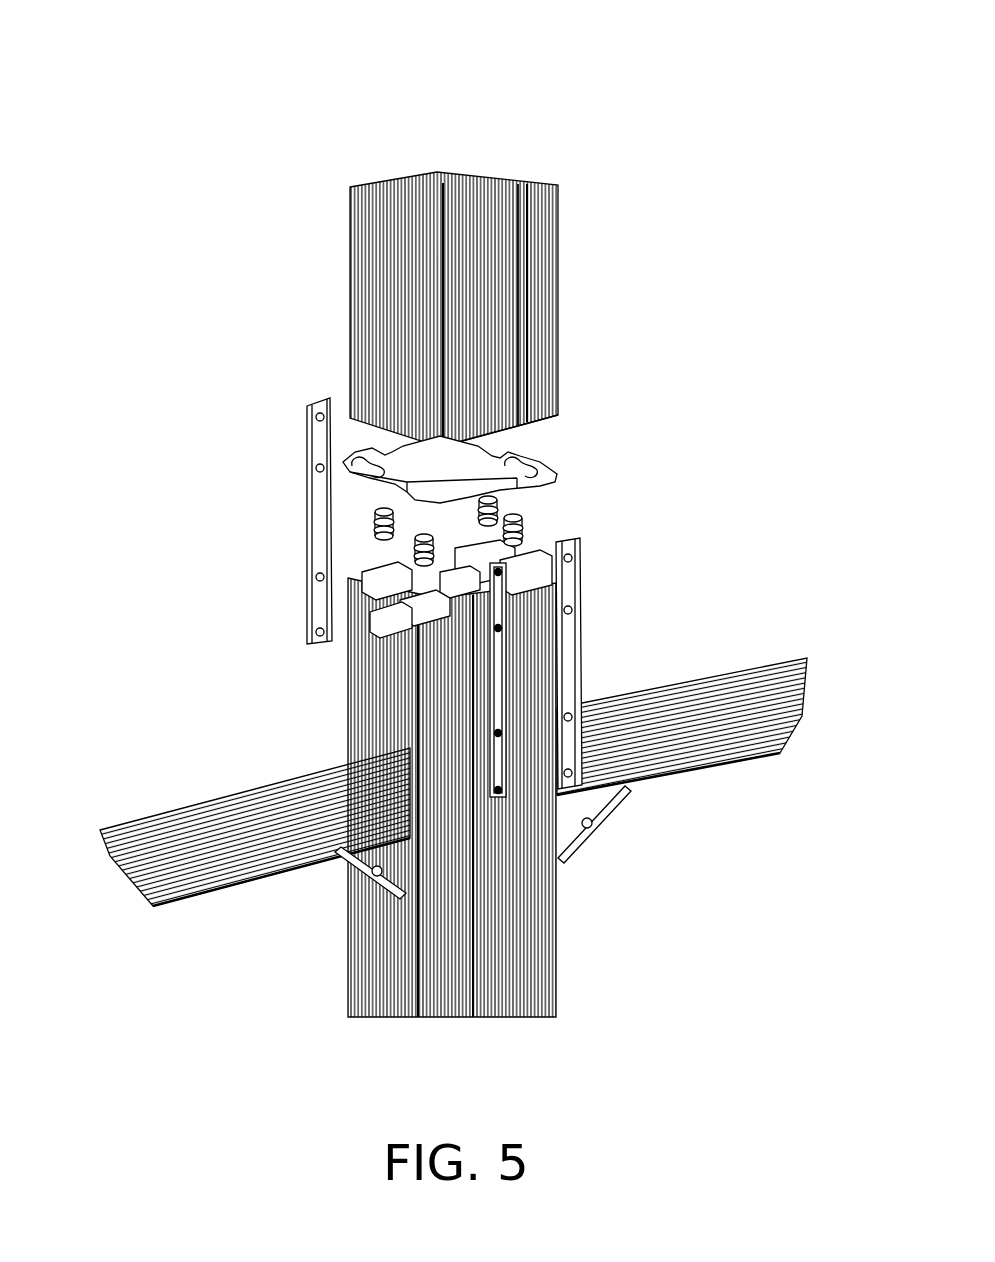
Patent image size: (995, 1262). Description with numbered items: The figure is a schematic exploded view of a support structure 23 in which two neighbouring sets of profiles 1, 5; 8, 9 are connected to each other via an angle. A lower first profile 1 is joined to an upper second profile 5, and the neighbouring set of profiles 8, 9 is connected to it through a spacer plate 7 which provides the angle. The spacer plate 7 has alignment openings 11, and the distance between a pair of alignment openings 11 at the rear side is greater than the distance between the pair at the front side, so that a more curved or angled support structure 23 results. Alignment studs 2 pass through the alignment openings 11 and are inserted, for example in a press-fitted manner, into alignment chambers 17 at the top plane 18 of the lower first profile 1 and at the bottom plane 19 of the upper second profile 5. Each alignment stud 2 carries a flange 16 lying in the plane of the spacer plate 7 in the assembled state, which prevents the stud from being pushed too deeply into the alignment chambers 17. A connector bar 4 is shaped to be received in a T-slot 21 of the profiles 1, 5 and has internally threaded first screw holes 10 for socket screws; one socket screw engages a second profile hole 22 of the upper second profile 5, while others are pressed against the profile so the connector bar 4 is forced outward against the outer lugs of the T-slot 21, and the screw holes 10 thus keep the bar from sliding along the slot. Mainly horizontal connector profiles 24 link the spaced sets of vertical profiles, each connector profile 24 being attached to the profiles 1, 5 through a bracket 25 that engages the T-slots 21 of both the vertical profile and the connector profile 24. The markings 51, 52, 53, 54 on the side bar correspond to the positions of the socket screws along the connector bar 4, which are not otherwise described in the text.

The lower first profile 1 is at (460, 836).
The alignment studs 2 is at (558, 513).
The connector bar 4 is at (419, 570).
The upper second profile 5 is at (466, 257).
The spacer plate 7 is at (449, 401).
The profile of neighbouring set 8 is at (310, 984).
The profile of neighbouring set 9 is at (328, 254).
The first screw holes 10 is at (571, 612).
The alignment openings 11 is at (392, 460).
The flange 16 is at (525, 527).
The alignment chambers 17 is at (388, 623).
The top plane 18 is at (384, 617).
The bottom plane 19 is at (553, 415).
The T-slot 21 is at (443, 187).
The second profile hole 22 is at (520, 302).
The support structure 23 is at (227, 121).
The connector profiles 24 is at (133, 897).
The bracket 25 is at (333, 860).
The screw hole 51 is at (308, 405).
The screw hole 52 is at (318, 470).
The screw hole 53 is at (319, 575).
The screw hole 54 is at (318, 630).